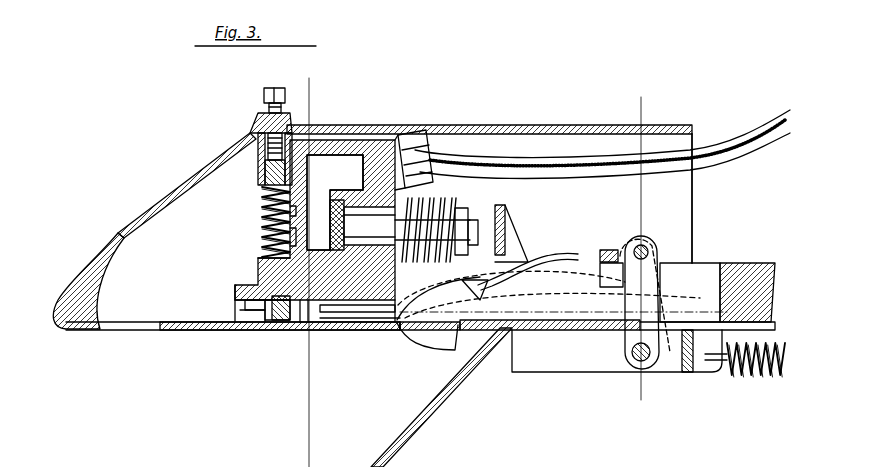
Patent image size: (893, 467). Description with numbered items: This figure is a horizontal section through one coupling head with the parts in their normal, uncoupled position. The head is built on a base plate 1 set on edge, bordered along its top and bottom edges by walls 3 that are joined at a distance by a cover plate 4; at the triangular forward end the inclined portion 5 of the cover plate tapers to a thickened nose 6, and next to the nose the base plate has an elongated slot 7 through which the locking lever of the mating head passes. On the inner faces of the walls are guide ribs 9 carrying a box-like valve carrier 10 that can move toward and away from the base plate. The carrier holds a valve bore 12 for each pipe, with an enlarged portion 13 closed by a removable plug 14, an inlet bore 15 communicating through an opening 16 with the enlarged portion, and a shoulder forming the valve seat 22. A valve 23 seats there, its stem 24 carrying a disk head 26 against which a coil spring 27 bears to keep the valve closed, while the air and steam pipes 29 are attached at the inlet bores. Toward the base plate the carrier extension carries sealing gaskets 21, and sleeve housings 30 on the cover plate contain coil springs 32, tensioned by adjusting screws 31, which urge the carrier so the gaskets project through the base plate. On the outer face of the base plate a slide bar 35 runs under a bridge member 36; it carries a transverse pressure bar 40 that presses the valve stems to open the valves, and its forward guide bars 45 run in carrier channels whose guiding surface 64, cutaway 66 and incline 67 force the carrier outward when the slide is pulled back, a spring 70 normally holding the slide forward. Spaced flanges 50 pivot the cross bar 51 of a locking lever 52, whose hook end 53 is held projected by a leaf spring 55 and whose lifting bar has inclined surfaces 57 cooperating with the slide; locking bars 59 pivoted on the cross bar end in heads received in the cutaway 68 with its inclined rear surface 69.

The base plate 1 is at (188, 331).
The walls 3 is at (625, 240).
The cover plate 4 is at (526, 124).
The inclined portion of cover plate 5 is at (167, 200).
The nose 6 is at (97, 277).
The slot 7 is at (152, 321).
The guide ribs 9 is at (330, 126).
The valve carrier 10 is at (384, 142).
The valve bore 12 is at (418, 212).
The enlarged portion of valve bore 13 is at (261, 241).
The removable plug 14 is at (261, 215).
The inlet bore 15 is at (352, 152).
The opening 16 is at (261, 191).
The sealing gasket 21 is at (275, 320).
The valve seat 22 is at (335, 202).
The valve 23 is at (322, 203).
The valve stem 24 is at (350, 212).
The disk head 26 is at (465, 212).
The coil spring 27 is at (472, 222).
The air and steam pipes 29 is at (725, 133).
The sleeve housing 30 is at (255, 121).
The adjusting screw 31 is at (274, 87).
The coil spring 32 is at (250, 256).
The slide bar 35 is at (752, 262).
The bridge member 36 is at (607, 250).
The pressure bar 40 is at (508, 224).
The guide bar 45 is at (382, 316).
The flanges 50 is at (592, 372).
The cross bar 51 is at (656, 250).
The locking lever 52 is at (522, 323).
The hook end 53 is at (423, 335).
The leaf spring 55 is at (560, 254).
The inclined surface 57 is at (482, 302).
The locking bar 59 is at (352, 316).
The guiding surface 64 is at (262, 302).
The cutaway portion 66 is at (244, 300).
The inclined surface 67 is at (252, 300).
The cutaway portion 68 is at (300, 312).
The inclined rear surface 69 is at (306, 316).
The spring 70 is at (752, 378).